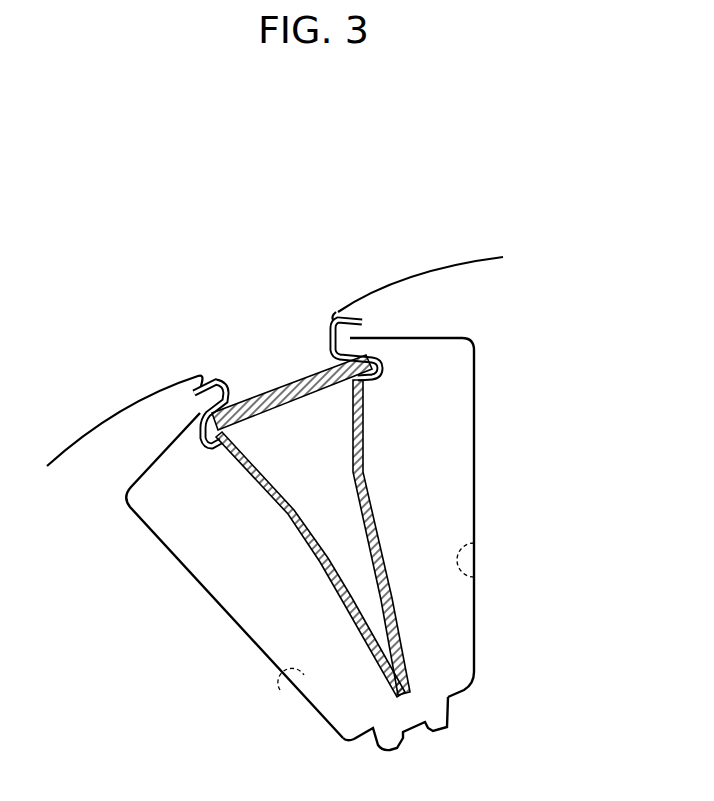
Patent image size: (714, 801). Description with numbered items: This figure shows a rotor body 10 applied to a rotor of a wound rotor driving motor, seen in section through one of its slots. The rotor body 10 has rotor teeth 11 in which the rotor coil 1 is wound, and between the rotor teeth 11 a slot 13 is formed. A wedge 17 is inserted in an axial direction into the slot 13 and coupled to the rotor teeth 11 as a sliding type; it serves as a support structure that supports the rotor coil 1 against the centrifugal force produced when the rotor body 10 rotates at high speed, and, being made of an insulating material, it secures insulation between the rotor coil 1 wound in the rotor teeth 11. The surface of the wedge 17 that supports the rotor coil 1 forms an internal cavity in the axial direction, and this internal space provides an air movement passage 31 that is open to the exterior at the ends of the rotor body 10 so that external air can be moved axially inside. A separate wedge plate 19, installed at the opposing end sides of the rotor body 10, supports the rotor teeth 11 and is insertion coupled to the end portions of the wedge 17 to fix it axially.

The rotor coil 1 is at (257, 585).
The rotor body 10 is at (110, 408).
The rotor teeth 11 is at (492, 502).
The slot 13 is at (492, 578).
The wedge 17 is at (362, 432).
The wedge plate 19 is at (271, 398).
The air movement passage 31 is at (305, 444).